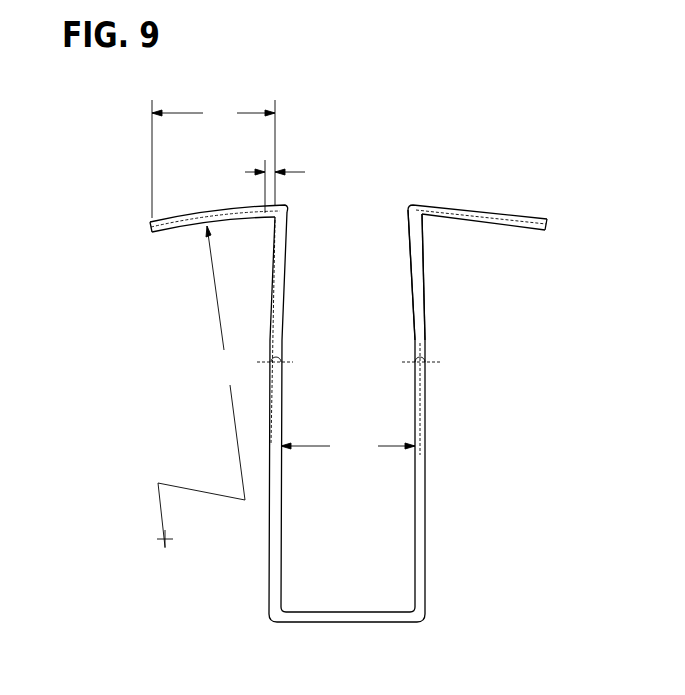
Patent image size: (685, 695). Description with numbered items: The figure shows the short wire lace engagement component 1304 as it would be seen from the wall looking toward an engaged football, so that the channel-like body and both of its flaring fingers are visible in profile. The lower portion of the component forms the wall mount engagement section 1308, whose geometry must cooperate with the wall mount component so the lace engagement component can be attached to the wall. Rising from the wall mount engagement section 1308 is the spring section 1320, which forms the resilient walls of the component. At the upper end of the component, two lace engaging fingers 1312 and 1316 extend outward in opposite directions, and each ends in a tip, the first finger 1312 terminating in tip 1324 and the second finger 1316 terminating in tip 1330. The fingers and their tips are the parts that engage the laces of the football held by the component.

The short wire lace engagement component 1304 is at (298, 71).
The wall mount engagement section 1308 is at (425, 490).
The lace engaging finger 1312 is at (172, 217).
The lace engaging finger 1316 is at (488, 212).
The spring section 1320 is at (422, 285).
The tip 1324 is at (152, 230).
The tip 1330 is at (543, 228).